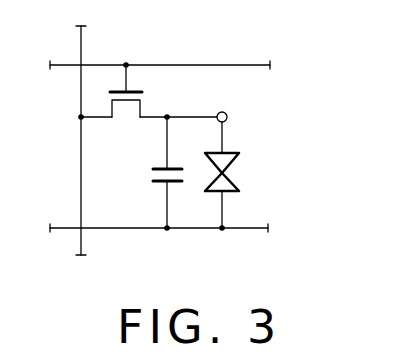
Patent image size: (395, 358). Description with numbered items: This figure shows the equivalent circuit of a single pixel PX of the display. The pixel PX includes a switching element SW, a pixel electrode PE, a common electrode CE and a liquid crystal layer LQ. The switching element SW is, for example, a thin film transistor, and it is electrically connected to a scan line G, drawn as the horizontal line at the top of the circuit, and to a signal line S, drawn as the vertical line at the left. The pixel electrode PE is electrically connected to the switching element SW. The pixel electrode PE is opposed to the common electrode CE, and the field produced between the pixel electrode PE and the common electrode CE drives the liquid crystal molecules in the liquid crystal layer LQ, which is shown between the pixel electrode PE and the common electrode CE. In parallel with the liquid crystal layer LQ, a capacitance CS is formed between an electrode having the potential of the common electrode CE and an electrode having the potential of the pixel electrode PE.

The scan line G is at (65, 64).
The signal line S is at (80, 171).
The common electrode CE is at (255, 229).
The pixel PX is at (305, 103).
The switching element SW is at (147, 103).
The capacitance CS is at (150, 173).
The pixel electrode PE is at (227, 117).
The liquid crystal layer LQ is at (240, 173).